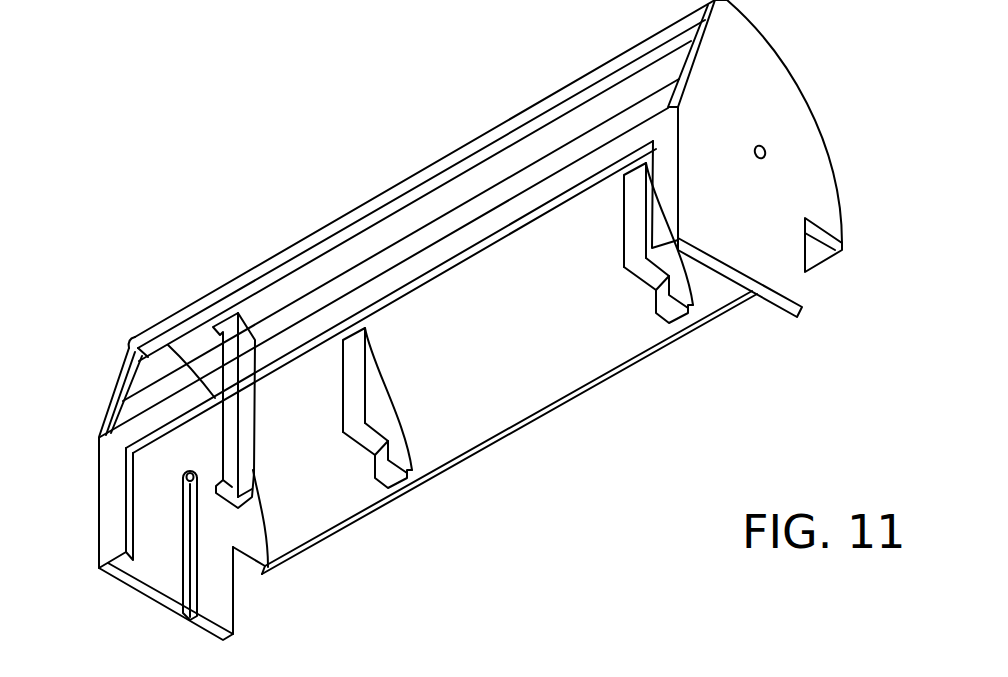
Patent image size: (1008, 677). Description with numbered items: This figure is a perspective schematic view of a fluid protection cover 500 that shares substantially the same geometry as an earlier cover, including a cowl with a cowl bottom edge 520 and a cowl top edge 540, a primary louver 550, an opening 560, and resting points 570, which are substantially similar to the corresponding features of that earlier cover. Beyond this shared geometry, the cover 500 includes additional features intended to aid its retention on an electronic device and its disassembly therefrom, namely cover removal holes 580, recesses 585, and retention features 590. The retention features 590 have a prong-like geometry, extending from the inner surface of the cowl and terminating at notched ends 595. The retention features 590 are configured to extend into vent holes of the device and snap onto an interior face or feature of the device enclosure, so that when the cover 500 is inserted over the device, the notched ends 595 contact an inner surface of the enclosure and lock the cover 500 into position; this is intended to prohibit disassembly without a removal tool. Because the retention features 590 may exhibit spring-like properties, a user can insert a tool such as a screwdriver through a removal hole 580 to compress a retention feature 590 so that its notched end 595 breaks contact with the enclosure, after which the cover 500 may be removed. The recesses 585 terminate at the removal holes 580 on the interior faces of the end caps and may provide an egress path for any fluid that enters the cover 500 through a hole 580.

The fluid protection cover 500 is at (170, 176).
The cowl bottom edge 520 is at (498, 442).
The cowl top edge 540 is at (459, 158).
The primary louver 550 is at (423, 267).
The opening 560 is at (310, 305).
The resting points 570 is at (395, 483).
The cover removal holes 580 is at (766, 153).
The recesses 585 is at (190, 588).
The retention features 590 is at (246, 415).
The notched ends 595 is at (250, 482).